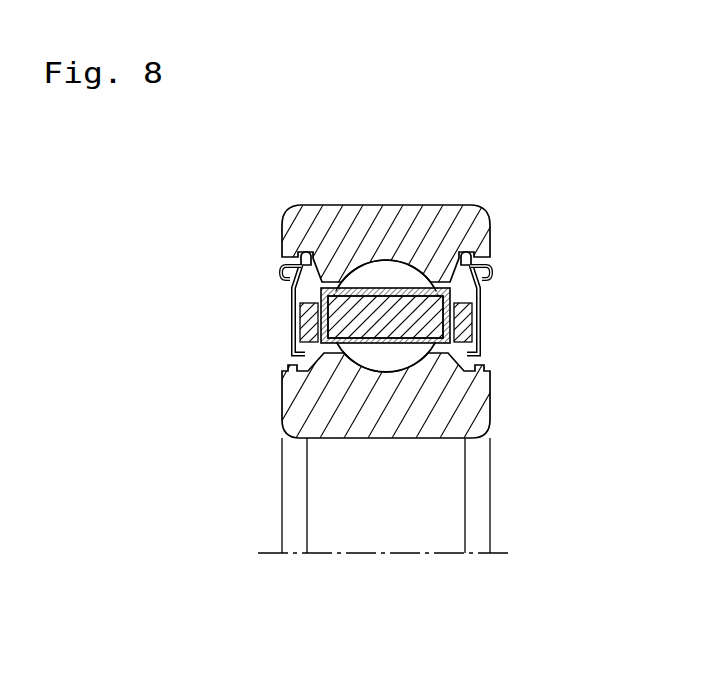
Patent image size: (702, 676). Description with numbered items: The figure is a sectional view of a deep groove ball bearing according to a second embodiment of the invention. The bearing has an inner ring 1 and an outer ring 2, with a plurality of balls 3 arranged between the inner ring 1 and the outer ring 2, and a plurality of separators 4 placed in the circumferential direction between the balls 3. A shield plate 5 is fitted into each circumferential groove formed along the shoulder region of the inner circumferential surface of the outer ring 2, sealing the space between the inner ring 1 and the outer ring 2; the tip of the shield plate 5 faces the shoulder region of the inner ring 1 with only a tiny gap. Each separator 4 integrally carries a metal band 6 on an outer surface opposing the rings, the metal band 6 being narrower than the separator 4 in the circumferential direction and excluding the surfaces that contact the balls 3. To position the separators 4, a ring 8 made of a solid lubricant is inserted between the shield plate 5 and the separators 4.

The inner ring 1 is at (470, 423).
The outer ring 2 is at (465, 232).
The ball 3 is at (393, 278).
The separator 4 is at (485, 287).
The shield plate 5 is at (292, 308).
The metal band 6 is at (466, 323).
The ring 8 is at (308, 328).